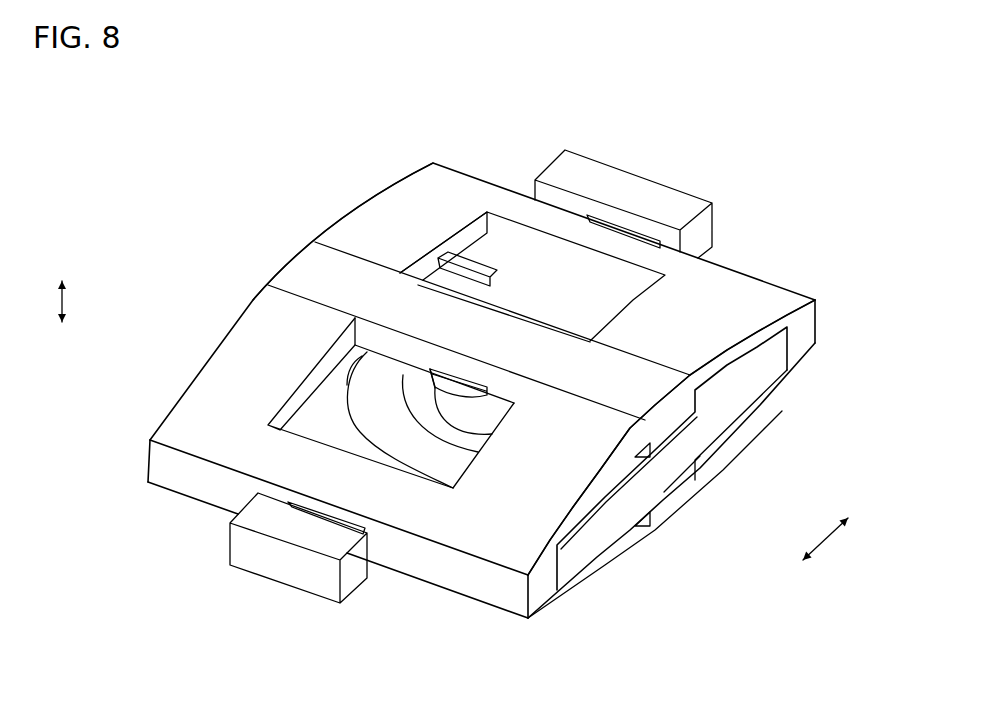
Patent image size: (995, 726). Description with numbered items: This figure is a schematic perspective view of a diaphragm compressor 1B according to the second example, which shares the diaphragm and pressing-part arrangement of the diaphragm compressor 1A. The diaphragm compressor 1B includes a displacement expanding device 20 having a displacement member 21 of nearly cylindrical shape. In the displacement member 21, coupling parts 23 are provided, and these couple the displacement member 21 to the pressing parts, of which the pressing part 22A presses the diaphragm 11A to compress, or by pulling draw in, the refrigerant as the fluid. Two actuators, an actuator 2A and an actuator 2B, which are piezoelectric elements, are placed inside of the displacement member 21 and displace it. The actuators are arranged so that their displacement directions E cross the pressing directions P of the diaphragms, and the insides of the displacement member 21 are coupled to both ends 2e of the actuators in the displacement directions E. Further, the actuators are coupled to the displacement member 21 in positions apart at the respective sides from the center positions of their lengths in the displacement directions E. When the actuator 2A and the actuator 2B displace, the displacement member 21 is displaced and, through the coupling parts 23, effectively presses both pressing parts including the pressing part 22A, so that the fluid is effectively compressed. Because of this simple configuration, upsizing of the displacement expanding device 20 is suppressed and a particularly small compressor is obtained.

The displacement expanding device 20 is at (440, 162).
The displacement member 21 is at (355, 236).
The coupling part 23 is at (470, 402).
The end of actuator 2e is at (373, 185).
The actuator 2B is at (272, 282).
The actuator 2A is at (710, 415).
The diaphragm compressor 1A is at (320, 392).
The diaphragm compressor 1B is at (772, 175).
The diaphragm 11A is at (422, 420).
The pressing part 22A is at (449, 397).
The pressing direction P is at (51, 301).
The displacement direction E is at (825, 538).